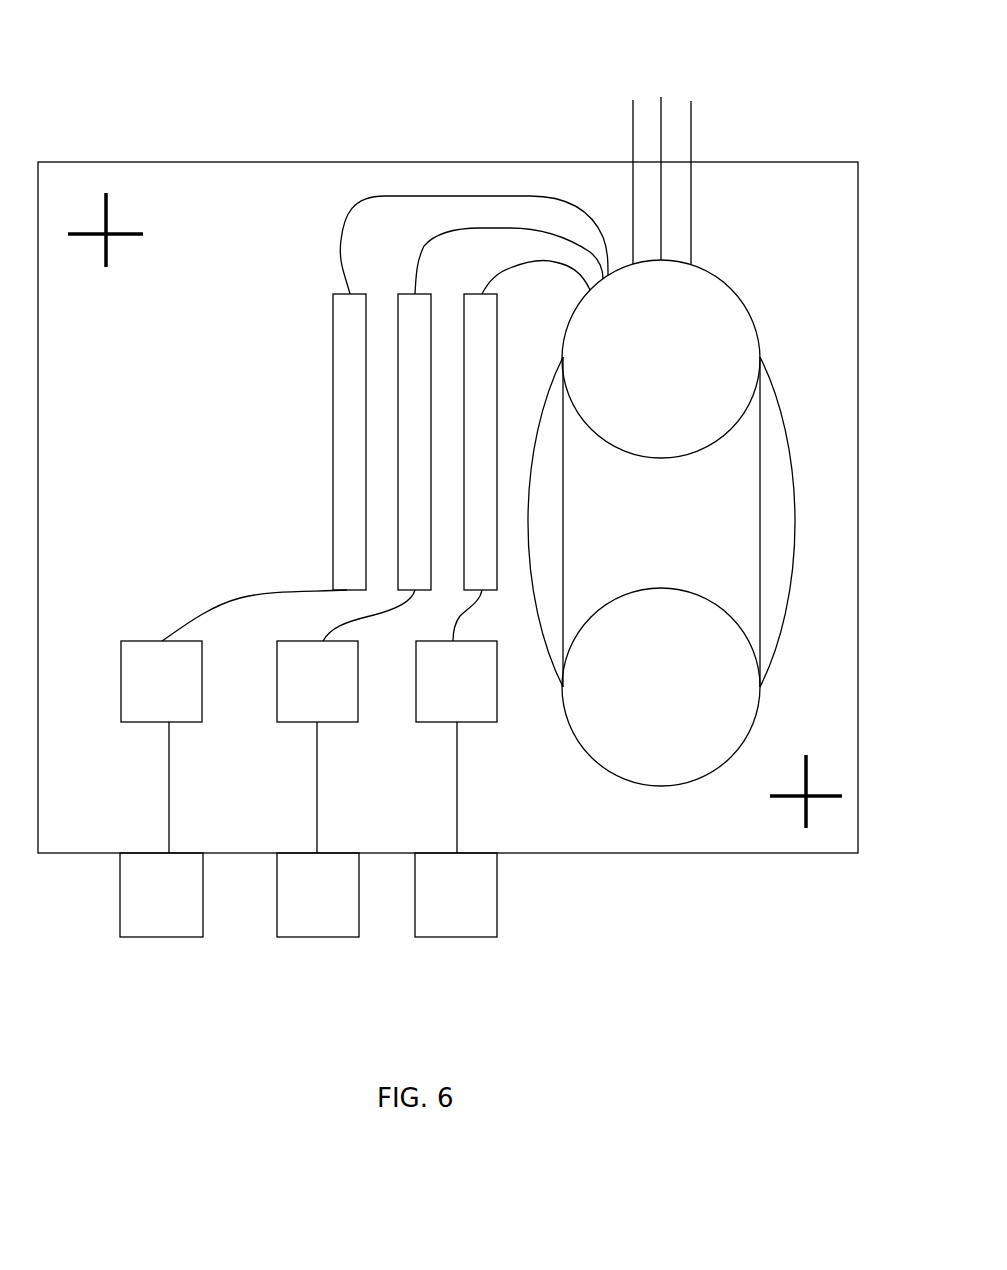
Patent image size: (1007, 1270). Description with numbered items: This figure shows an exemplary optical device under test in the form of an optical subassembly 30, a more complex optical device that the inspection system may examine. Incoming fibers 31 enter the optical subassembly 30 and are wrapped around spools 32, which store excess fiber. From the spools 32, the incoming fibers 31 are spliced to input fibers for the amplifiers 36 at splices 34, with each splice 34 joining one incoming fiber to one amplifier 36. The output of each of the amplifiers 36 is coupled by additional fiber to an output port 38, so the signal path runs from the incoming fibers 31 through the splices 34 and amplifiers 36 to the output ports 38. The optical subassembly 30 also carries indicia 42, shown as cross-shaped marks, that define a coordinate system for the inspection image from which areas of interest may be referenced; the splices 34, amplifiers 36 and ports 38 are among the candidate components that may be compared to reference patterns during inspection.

The optical subassembly 30 is at (255, 72).
The incoming fibers 31 is at (678, 95).
The spools 32 is at (737, 290).
The splices 34 is at (332, 377).
The amplifiers 36 is at (142, 640).
The output ports 38 is at (120, 935).
The indicia 42 is at (137, 272).